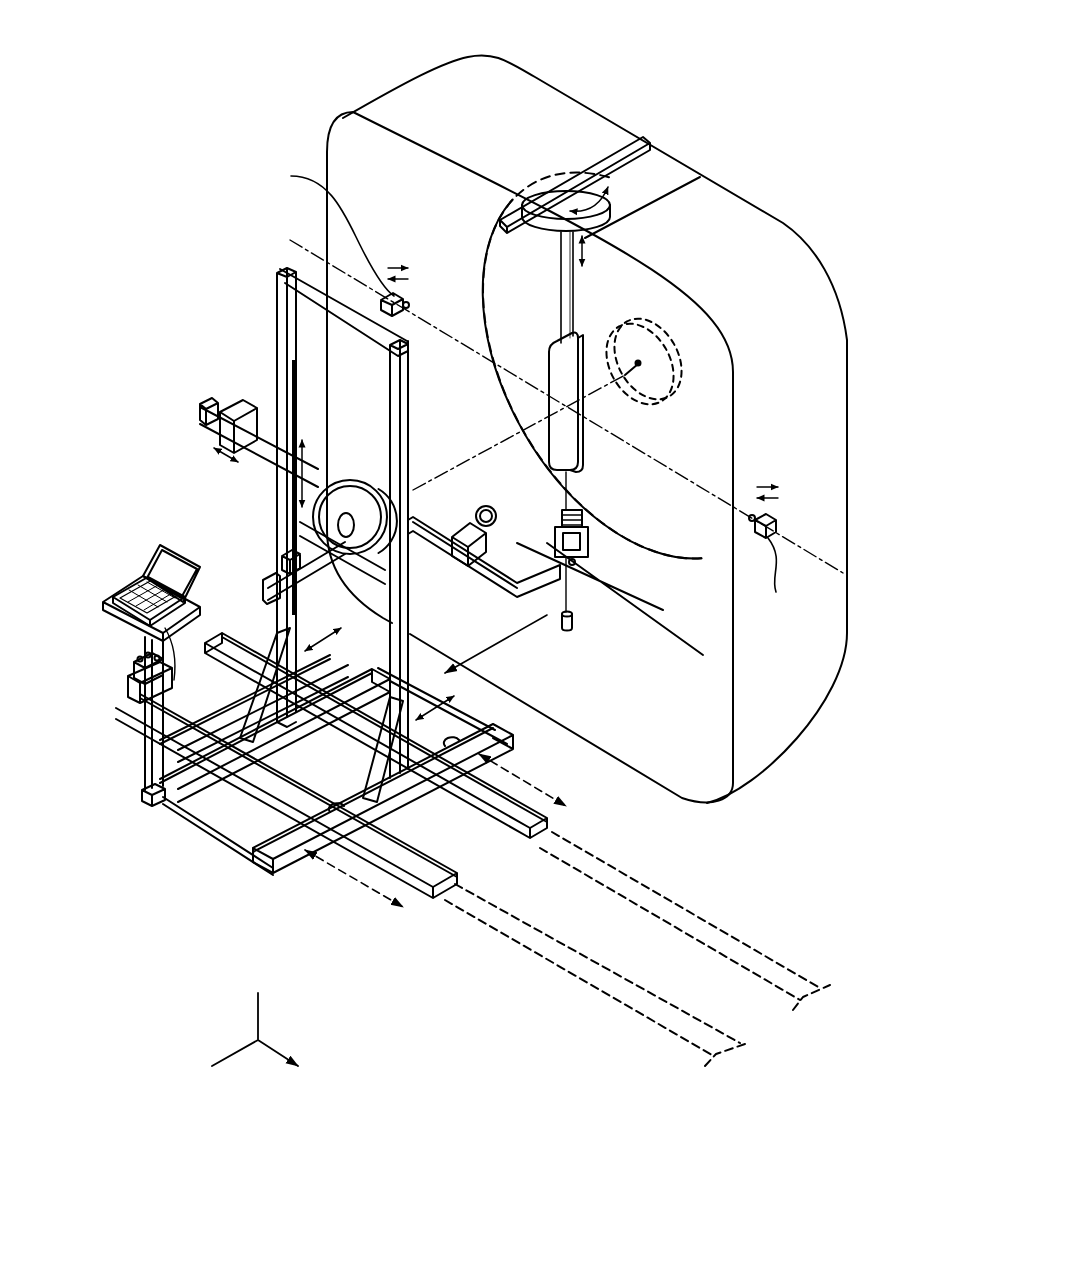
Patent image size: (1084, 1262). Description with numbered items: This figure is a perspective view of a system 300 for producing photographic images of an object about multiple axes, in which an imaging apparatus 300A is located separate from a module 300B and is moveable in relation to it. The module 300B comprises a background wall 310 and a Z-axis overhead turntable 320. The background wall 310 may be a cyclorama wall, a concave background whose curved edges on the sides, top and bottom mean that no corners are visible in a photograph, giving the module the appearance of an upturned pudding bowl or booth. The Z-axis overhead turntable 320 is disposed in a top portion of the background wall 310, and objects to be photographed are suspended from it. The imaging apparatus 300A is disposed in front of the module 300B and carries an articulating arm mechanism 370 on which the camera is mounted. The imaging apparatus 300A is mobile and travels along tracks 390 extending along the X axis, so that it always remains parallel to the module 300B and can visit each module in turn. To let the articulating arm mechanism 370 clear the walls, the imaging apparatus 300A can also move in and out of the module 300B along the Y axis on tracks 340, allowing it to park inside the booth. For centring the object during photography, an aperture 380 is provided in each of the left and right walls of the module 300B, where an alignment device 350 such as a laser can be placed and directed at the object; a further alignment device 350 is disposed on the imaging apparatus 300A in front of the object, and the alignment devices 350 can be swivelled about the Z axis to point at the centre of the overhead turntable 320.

The system 300 is at (273, 116).
The imaging apparatus 300A is at (243, 380).
The module 300B is at (750, 160).
The background wall 310 is at (767, 243).
The Z-axis overhead turntable 320 is at (552, 198).
The tracks 340 is at (286, 862).
The alignment device 350 is at (373, 298).
The articulating arm mechanism 370 is at (555, 560).
The aperture 380 is at (527, 396).
The tracks 390 is at (690, 922).